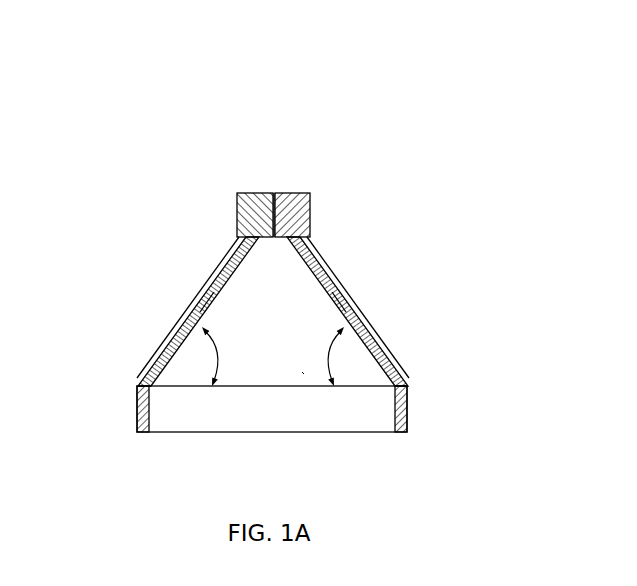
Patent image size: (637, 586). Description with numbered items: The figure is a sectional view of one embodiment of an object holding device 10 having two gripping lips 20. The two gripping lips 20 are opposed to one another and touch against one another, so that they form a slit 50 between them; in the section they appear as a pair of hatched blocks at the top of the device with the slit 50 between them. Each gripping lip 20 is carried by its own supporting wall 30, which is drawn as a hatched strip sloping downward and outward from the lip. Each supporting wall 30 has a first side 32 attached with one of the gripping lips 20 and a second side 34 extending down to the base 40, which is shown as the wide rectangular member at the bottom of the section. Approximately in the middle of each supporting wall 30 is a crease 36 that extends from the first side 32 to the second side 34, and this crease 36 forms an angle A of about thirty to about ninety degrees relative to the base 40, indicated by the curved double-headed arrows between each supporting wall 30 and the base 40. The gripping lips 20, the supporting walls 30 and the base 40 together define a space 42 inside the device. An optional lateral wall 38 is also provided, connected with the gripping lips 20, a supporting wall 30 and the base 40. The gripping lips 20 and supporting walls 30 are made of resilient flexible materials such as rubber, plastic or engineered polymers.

The object holding device 10 is at (284, 85).
The gripping lips 20 is at (240, 193).
The slit 50 is at (270, 193).
The supporting wall 30 is at (232, 260).
The first side 32 is at (230, 245).
The crease 36 is at (200, 312).
The second side 34 is at (140, 383).
The lateral wall 38 is at (262, 316).
The base 40 is at (137, 405).
The space 42 is at (302, 372).
The angle A is at (217, 360).